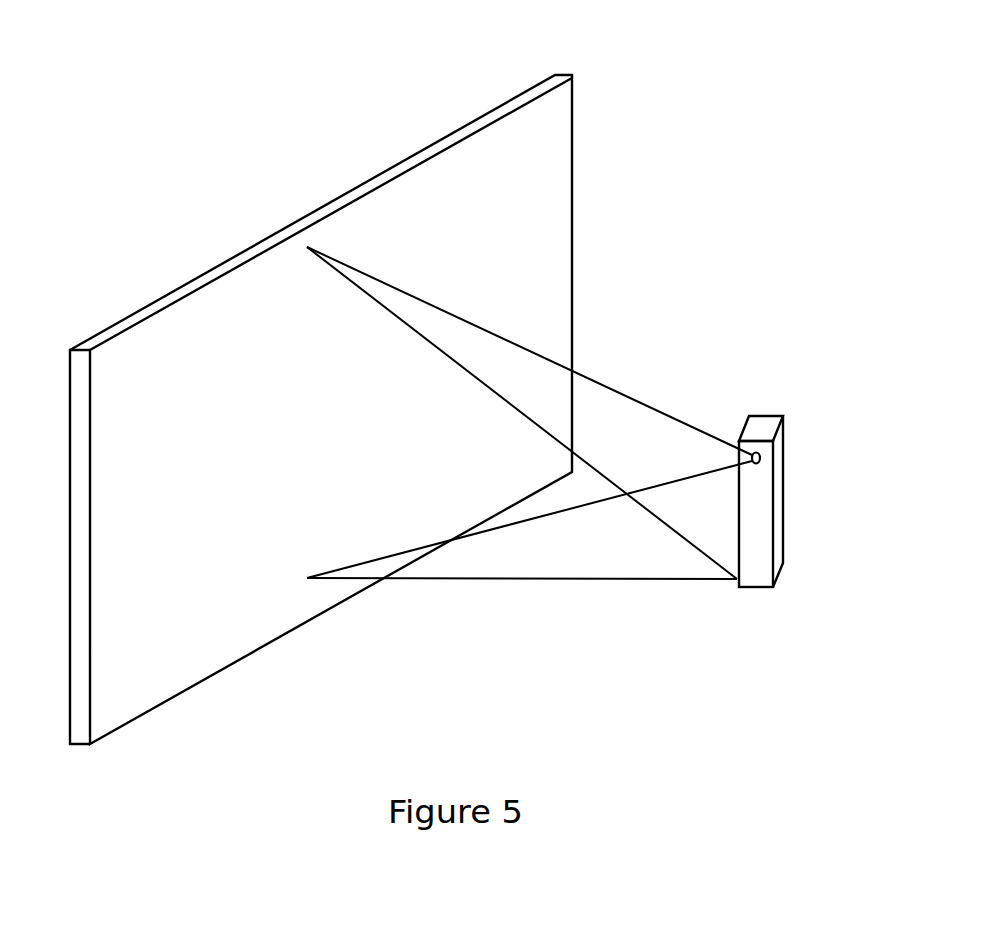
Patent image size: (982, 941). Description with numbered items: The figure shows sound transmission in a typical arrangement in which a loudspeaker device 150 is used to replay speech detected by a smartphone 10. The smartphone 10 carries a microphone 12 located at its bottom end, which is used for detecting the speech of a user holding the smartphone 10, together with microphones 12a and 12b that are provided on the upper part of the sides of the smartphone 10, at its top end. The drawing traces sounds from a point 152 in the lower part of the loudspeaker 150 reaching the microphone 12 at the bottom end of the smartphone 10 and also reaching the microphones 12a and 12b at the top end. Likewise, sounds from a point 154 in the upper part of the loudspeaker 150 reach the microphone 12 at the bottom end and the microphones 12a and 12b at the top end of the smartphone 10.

The smartphone 10 is at (758, 526).
The microphone 12 is at (731, 581).
The microphone 12a is at (783, 452).
The microphone 12b is at (752, 454).
The loudspeaker device 150 is at (333, 198).
The point in the lower part of the loudspeaker 152 is at (307, 578).
The point in the upper part of the loudspeaker 154 is at (307, 247).